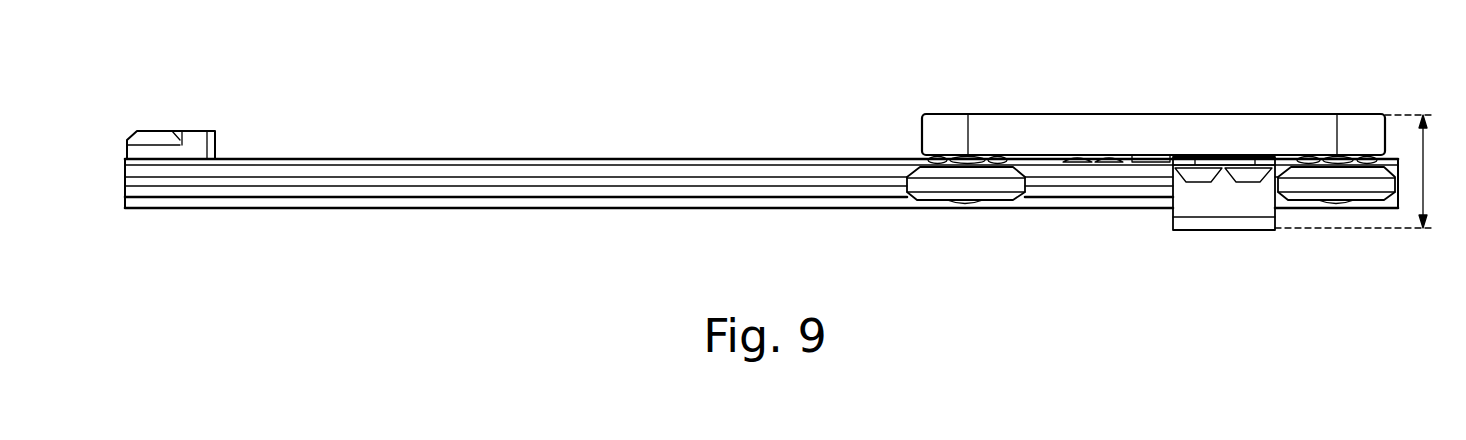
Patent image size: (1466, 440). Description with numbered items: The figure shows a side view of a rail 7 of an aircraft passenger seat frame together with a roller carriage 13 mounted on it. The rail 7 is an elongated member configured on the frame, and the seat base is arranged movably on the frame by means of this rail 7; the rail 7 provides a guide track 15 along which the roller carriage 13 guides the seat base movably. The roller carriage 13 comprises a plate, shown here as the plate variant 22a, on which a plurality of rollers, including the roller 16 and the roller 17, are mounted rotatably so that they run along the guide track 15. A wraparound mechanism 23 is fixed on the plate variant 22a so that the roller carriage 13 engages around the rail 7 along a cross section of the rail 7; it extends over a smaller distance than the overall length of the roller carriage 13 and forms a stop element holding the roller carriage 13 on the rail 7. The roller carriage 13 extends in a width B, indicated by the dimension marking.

The rail 7 is at (330, 228).
The roller carriage 13 is at (1128, 85).
The guide track 15 is at (237, 190).
The roller 16 is at (935, 200).
The roller 17 is at (1360, 200).
The plate variant 22a is at (1238, 125).
The wraparound mechanism 23 is at (1235, 200).
The width B is at (1353, 171).